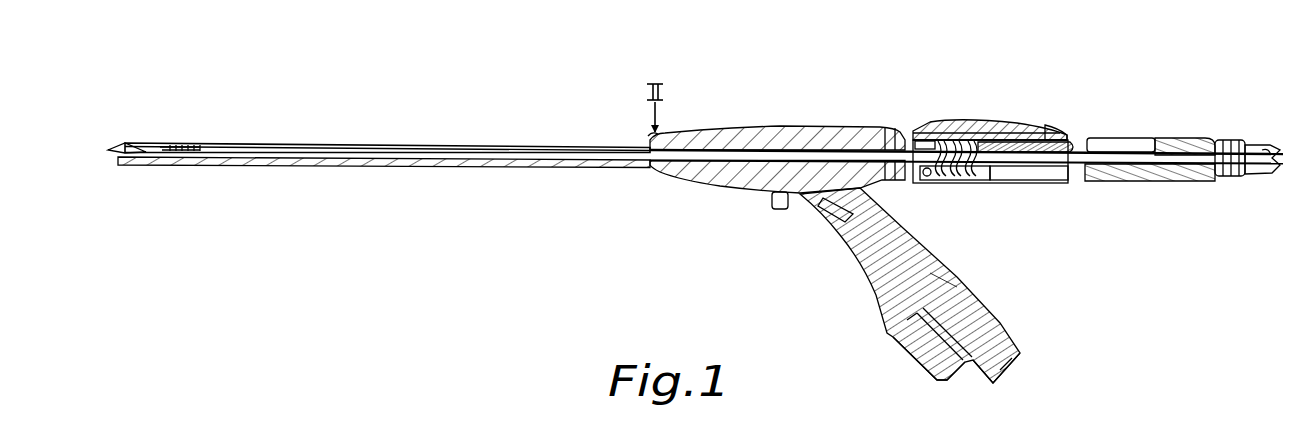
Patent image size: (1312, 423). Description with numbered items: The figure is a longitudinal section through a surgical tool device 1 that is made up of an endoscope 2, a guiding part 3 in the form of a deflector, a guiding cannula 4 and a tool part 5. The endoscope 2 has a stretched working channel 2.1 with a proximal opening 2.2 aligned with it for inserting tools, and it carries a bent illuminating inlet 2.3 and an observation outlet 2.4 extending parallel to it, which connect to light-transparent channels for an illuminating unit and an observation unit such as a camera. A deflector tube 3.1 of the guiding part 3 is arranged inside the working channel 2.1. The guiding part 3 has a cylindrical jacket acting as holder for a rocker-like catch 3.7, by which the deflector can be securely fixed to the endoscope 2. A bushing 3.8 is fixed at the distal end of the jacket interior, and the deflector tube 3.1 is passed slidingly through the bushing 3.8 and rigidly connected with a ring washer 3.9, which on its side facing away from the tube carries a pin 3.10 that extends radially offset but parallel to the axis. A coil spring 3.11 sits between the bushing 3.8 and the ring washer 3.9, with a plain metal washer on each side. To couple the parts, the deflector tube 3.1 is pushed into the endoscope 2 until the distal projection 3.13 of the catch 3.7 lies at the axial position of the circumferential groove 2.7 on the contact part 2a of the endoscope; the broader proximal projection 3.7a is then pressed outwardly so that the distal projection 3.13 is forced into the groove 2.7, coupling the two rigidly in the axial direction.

The surgical tool device 1 is at (1192, 73).
The endoscope 2 is at (655, 190).
The contact part 2a is at (732, 136).
The working channel 2.1 is at (291, 165).
The proximal opening 2.2 is at (906, 186).
The illuminating inlet 2.3 is at (945, 376).
The observation outlet 2.4 is at (1010, 367).
The circumferential groove 2.7 is at (890, 137).
The guiding part 3 is at (1062, 205).
The deflector tube 3.1 is at (366, 162).
The catch 3.7 is at (975, 120).
The proximal projection 3.7a is at (1055, 127).
The bushing 3.8 is at (946, 184).
The ring washer 3.9 is at (990, 184).
The pin 3.10 is at (1022, 128).
The coil spring 3.11 is at (980, 184).
The distal projection 3.13 is at (908, 133).
The guiding cannula 4 is at (1130, 190).
The tool part 5 is at (1240, 210).